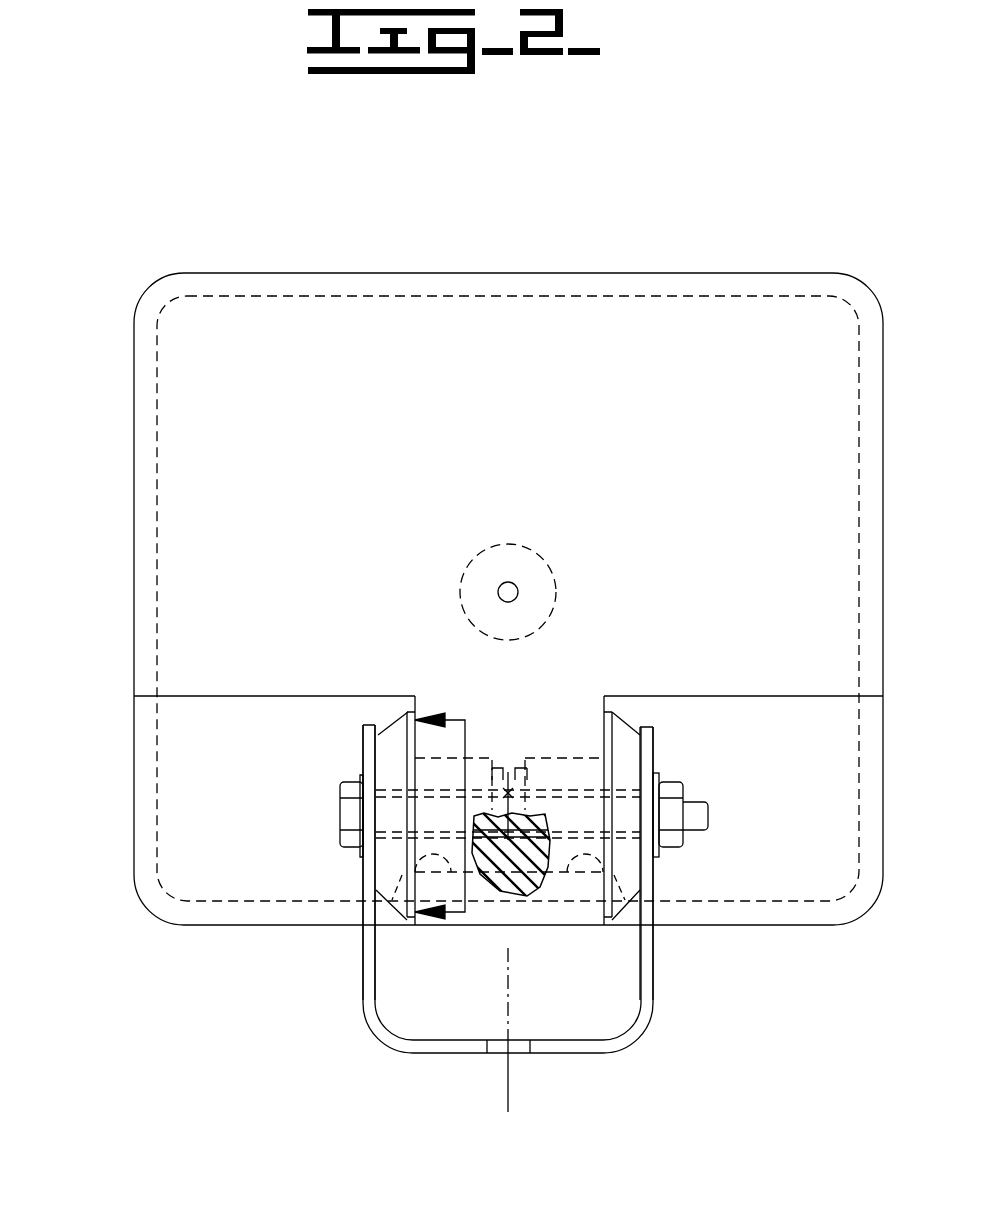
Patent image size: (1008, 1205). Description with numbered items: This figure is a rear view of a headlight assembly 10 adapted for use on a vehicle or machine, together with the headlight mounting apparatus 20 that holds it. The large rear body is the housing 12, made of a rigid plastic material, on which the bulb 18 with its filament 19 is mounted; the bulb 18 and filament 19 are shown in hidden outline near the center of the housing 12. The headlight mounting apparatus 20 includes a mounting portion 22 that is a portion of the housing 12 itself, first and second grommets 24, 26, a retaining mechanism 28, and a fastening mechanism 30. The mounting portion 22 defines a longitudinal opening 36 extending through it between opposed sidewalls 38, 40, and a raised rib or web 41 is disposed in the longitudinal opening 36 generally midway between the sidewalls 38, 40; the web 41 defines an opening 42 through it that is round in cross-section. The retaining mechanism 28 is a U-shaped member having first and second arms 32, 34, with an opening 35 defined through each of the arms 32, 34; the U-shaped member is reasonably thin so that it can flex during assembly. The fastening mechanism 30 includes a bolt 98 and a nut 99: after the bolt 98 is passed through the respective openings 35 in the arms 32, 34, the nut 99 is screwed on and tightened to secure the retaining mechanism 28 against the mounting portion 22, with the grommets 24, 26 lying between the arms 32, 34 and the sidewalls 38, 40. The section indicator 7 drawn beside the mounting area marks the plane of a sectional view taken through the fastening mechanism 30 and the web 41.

The section line 7- 7 is at (451, 816).
The headlight assembly 10 is at (228, 230).
The housing 12 is at (227, 348).
The bulb 18 is at (510, 543).
The filament 19 is at (518, 592).
The headlight mounting apparatus 20 is at (365, 913).
The mounting portion 22 is at (482, 975).
The first grommet 24 is at (393, 758).
The second grommet 26 is at (623, 760).
The retaining mechanism 28 is at (360, 1048).
The fastening mechanism 30 is at (217, 805).
The first arm 32 is at (368, 770).
The second arm 34 is at (647, 772).
The opening 35 is at (350, 812).
The longitudinal opening 36 is at (380, 925).
The sidewall 38 is at (410, 746).
The sidewall 40 is at (616, 746).
The web 41 is at (505, 760).
The opening 42 is at (533, 782).
The bolt 98 is at (353, 845).
The nut 99 is at (665, 848).